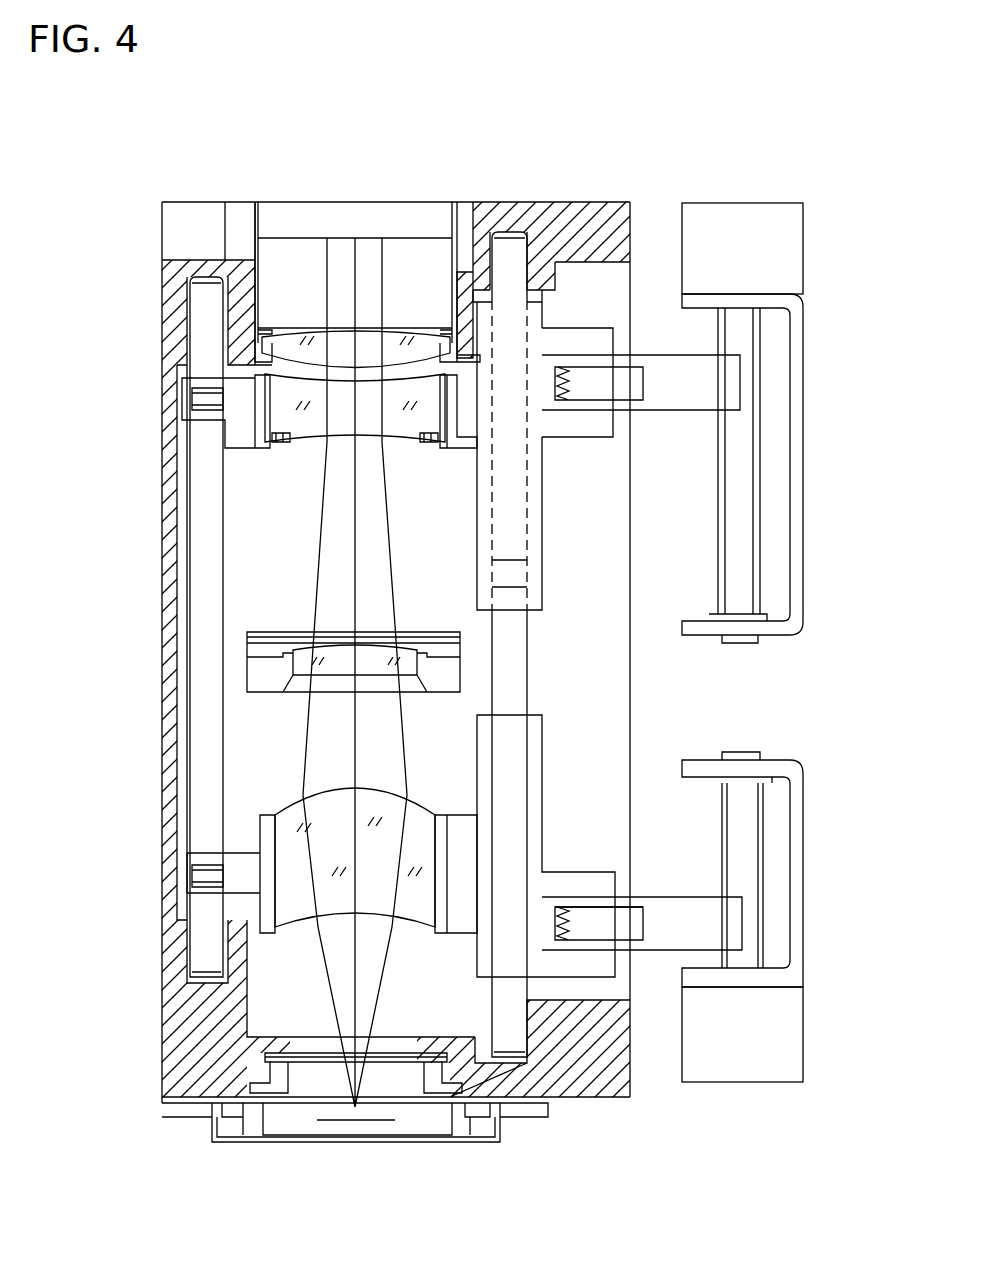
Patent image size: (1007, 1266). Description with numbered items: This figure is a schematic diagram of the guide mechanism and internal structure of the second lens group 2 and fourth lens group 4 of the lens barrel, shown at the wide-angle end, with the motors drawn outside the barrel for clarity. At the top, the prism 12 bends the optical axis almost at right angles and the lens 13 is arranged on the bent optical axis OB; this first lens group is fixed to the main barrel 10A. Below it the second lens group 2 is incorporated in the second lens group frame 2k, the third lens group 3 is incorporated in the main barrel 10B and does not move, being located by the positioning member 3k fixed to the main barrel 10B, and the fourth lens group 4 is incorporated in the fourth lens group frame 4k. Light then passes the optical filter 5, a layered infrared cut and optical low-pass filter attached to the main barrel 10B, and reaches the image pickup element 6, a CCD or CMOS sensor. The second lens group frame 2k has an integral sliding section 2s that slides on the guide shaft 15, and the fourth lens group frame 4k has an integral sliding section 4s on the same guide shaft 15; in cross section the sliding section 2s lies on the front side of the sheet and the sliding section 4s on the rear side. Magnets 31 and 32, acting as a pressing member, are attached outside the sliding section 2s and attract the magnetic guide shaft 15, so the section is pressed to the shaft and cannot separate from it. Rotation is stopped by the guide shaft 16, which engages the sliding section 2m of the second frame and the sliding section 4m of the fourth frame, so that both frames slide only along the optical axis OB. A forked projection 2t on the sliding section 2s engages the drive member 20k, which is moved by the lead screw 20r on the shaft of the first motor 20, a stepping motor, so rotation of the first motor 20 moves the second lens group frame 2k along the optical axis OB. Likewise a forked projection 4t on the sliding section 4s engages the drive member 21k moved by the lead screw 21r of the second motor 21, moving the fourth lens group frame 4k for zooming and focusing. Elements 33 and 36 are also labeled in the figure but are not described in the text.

The second lens group 2 is at (310, 437).
The second lens group frame 2k is at (467, 423).
The sliding section 2m is at (238, 412).
The sliding section 2s is at (515, 322).
The forked projection 2t is at (572, 423).
The third lens group 3 is at (332, 670).
The positioning member 3k is at (265, 680).
The fourth lens group 4 is at (303, 910).
The fourth lens group frame 4k is at (440, 930).
The sliding section 4m is at (240, 867).
The sliding section 4s is at (535, 762).
The forked projection 4t is at (580, 877).
The optical filter 5 is at (388, 1060).
The image pickup element 6 is at (407, 1125).
The main barrel 10A is at (175, 292).
The main barrel 10B is at (185, 1052).
The prism 12 is at (302, 245).
The lens 13 is at (395, 345).
The guide shaft 15 is at (513, 265).
The guide shaft 16 is at (200, 372).
The first motor 20 is at (796, 250).
The drive member 20k is at (722, 380).
The lead screw 20r is at (742, 456).
The second motor 21 is at (798, 1034).
The drive member 21k is at (727, 926).
The lead screw 21r is at (747, 828).
The magnet 31 is at (515, 345).
The magnet 32 is at (513, 573).
The rotation stopper of second lens frame 33 is at (205, 400).
The rotation stopper of fourth lens frame 36 is at (205, 877).
The optical axis OB is at (357, 530).